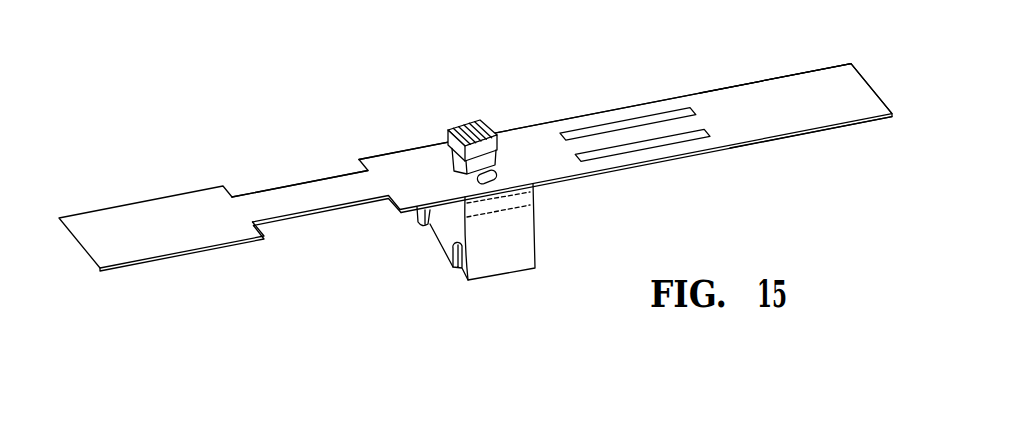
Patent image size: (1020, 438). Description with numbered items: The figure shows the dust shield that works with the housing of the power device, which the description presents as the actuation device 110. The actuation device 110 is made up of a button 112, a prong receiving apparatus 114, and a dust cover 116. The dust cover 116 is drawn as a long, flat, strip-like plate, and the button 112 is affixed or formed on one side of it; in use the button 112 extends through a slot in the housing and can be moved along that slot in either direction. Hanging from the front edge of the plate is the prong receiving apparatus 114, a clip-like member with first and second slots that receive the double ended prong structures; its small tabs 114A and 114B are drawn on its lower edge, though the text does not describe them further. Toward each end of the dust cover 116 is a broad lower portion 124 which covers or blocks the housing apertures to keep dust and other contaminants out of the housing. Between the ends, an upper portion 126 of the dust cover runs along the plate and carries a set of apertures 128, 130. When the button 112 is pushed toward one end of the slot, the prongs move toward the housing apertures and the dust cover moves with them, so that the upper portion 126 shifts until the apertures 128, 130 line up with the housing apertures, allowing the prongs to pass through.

The actuation device 110 is at (475, 174).
The button 112 is at (467, 123).
The prong receiving apparatus 114 is at (488, 266).
The first tab 114A is at (424, 234).
The second tab 114B is at (456, 273).
The dust cover 116 is at (522, 125).
The lower portion 124 is at (197, 255).
The upper portion 126 is at (298, 172).
The aperture 128 is at (683, 143).
The aperture 130 is at (284, 178).